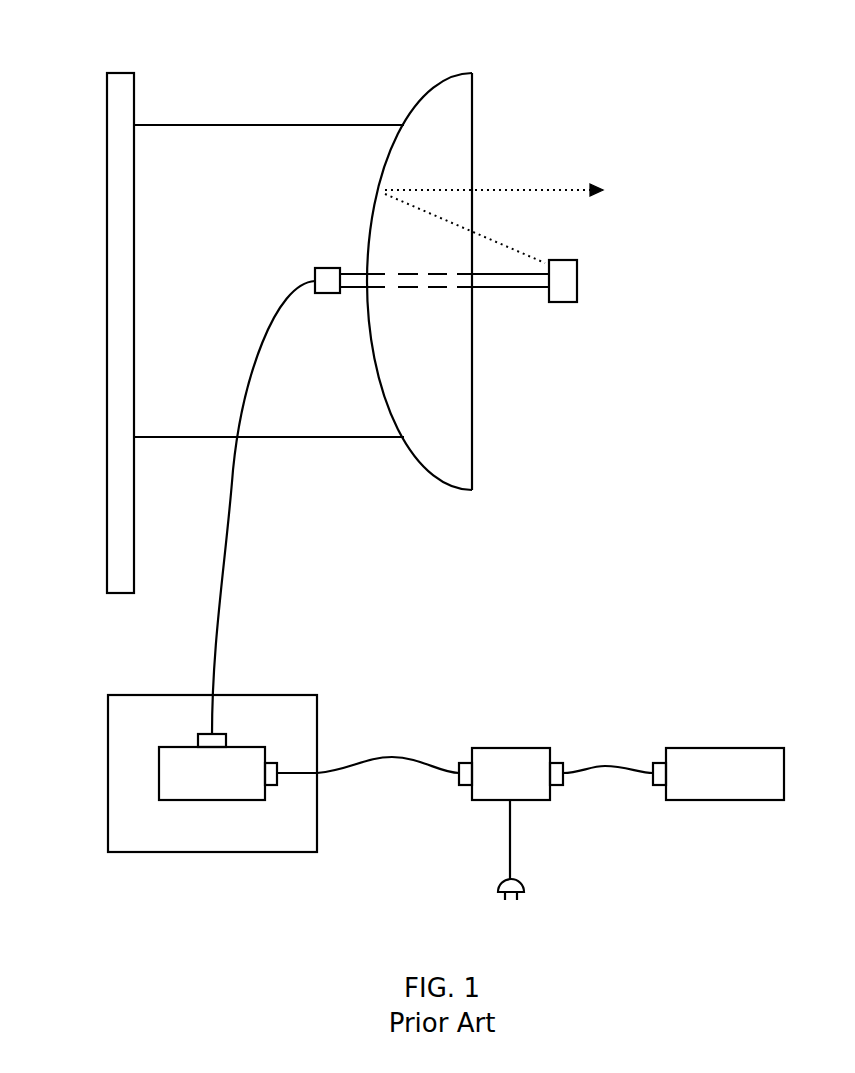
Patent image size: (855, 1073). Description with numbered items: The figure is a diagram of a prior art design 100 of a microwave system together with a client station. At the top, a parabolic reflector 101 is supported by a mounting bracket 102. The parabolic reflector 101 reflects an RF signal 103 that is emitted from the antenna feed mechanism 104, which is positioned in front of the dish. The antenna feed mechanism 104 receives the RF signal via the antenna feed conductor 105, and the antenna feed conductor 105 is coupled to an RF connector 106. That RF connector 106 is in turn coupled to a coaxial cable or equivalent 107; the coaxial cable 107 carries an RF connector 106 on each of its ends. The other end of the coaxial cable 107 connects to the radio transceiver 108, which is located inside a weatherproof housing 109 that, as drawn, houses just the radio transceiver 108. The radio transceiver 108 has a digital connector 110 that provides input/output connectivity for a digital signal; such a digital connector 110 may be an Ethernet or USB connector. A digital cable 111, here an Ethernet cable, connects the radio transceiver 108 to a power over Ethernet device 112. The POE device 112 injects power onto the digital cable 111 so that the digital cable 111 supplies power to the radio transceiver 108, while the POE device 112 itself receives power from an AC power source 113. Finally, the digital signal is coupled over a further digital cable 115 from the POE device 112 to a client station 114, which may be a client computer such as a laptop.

The prior art design 100 is at (720, 14).
The parabolic reflector 101 is at (452, 72).
The mounting bracket 102 is at (121, 72).
The RF signal 103 is at (517, 221).
The antenna feed mechanism 104 is at (577, 276).
The antenna feed conductor 105 is at (500, 290).
The RF connector 106 is at (331, 266).
The coaxial cable 107 is at (224, 542).
The radio transceiver 108 is at (159, 768).
The weatherproof housing 109 is at (108, 716).
The digital connector 110 is at (275, 786).
The digital cable 111 is at (386, 752).
The power over Ethernet device 112 is at (512, 747).
The AC power source 113 is at (513, 845).
The client station 114 is at (722, 747).
The digital cable 115 is at (604, 763).